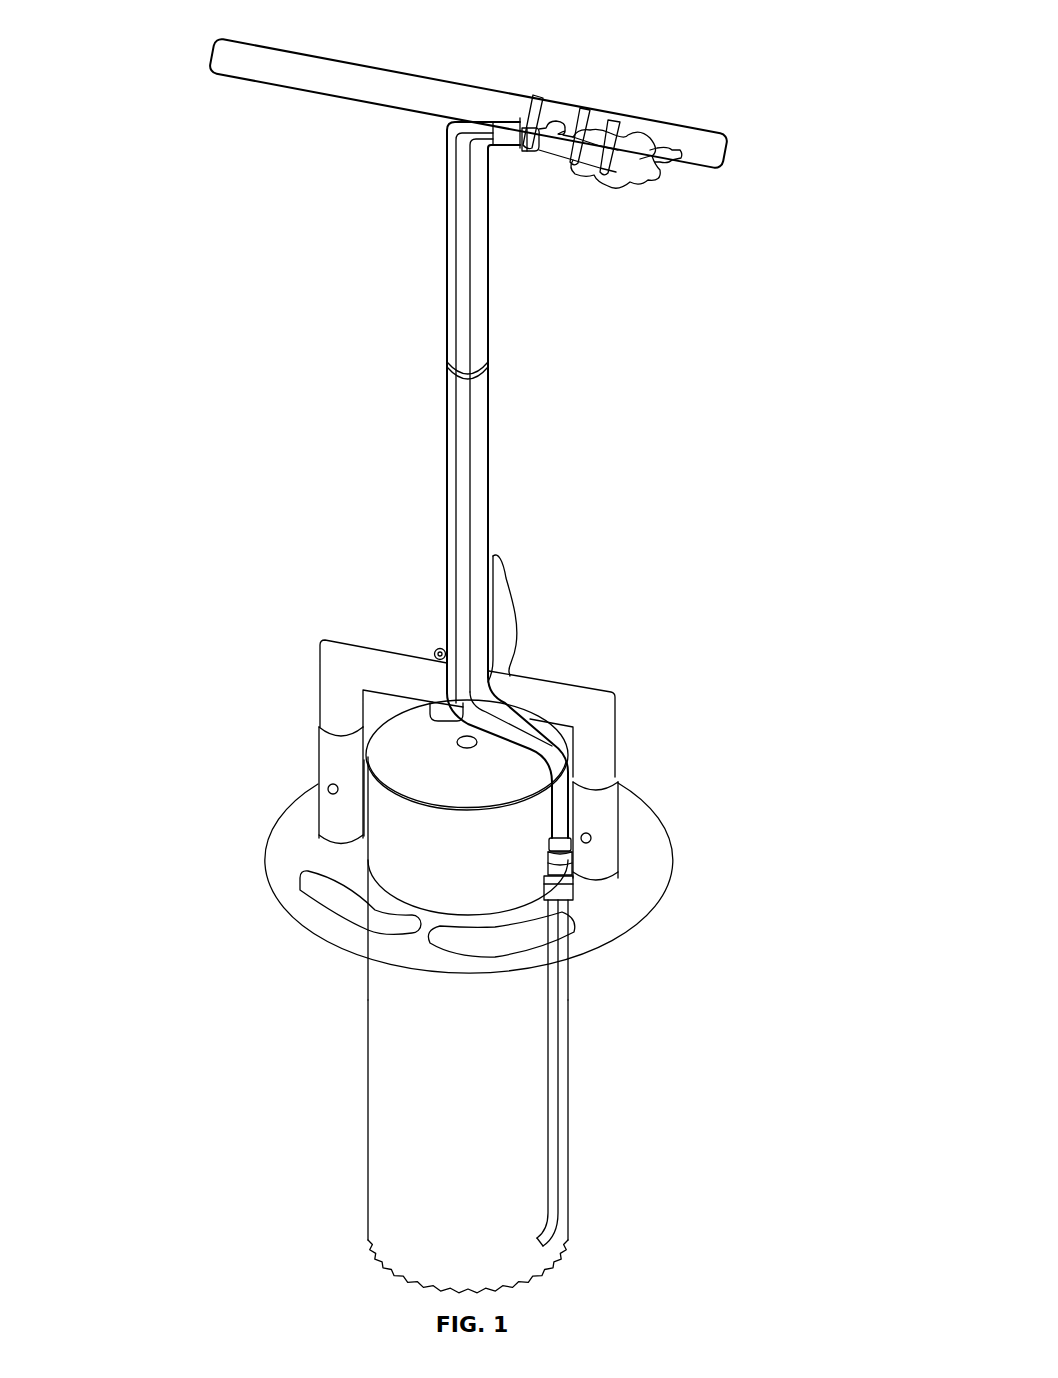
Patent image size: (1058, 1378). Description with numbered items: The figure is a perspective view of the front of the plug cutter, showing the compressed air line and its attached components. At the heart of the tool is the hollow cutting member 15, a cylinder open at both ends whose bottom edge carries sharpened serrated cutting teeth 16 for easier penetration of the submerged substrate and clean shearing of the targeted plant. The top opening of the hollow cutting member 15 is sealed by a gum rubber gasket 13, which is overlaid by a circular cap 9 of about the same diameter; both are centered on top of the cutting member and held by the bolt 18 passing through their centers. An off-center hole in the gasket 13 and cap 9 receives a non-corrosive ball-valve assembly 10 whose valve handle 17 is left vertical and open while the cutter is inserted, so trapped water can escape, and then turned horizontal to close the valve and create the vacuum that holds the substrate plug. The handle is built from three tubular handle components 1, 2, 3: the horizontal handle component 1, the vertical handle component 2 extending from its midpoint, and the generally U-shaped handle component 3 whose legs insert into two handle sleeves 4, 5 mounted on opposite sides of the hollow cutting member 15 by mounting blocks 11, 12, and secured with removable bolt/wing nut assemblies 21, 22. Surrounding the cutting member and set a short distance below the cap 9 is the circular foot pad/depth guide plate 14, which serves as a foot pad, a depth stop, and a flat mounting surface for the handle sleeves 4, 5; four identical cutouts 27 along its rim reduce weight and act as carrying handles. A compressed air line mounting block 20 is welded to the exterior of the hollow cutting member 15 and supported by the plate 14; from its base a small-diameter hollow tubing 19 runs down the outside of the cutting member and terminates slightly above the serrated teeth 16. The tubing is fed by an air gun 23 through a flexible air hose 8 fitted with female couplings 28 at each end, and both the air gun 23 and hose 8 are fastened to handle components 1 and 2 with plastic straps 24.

The handle component 1 is at (272, 76).
The handle component 2 is at (481, 427).
The U-shaped handle component 3 is at (564, 696).
The handle sleeve 4 is at (321, 766).
The handle sleeve 5 is at (611, 831).
The flexible air hose 8 is at (463, 437).
The cap 9 is at (403, 721).
The ball-valve assembly 10 is at (465, 735).
The mounting block 11 is at (573, 845).
The mounting block 12 is at (361, 807).
The gasket 13 is at (421, 804).
The foot pad/depth guide plate 14 is at (650, 852).
The hollow cutting member 15 is at (497, 1165).
The serrated cutting teeth 16 is at (522, 1283).
The valve handle 17 is at (511, 641).
The bolt 18 is at (439, 650).
The hollow tubing 19 is at (558, 1056).
The compressed air line mounting block 20 is at (574, 893).
The bolt/wing nut assembly 21 is at (590, 831).
The bolt/wing nut assembly 22 is at (327, 792).
The air gun 23 is at (629, 169).
The plastic straps 24 is at (542, 97).
The cutouts 27 is at (352, 905).
The female couplings 28 is at (516, 150).